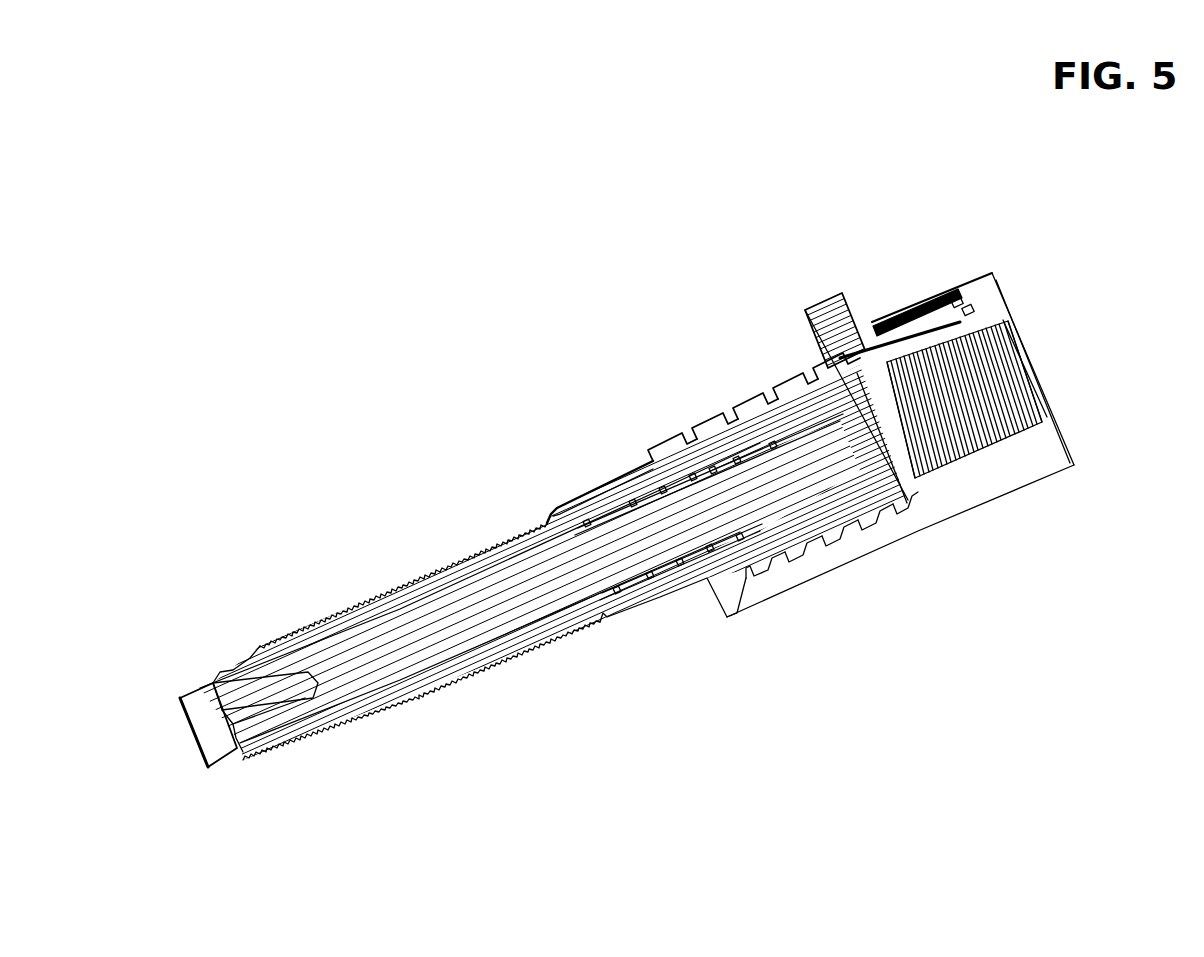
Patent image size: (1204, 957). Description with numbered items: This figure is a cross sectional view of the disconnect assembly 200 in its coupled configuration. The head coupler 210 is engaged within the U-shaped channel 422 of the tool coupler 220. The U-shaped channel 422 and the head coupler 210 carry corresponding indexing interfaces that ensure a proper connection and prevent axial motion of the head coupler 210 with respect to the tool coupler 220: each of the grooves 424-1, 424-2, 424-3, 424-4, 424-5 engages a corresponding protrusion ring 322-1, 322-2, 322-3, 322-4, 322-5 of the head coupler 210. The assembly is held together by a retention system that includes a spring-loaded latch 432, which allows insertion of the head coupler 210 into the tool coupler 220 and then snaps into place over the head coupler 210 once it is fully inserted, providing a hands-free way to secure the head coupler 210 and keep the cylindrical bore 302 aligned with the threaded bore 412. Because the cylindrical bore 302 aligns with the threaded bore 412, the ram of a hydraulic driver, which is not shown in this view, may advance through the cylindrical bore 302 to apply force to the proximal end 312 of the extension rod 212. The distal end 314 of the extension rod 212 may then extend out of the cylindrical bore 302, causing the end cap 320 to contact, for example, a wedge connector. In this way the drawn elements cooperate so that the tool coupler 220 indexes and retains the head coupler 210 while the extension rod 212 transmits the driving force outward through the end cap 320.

The disconnect assembly 200 is at (328, 203).
The head coupler 210 is at (620, 607).
The extension rod 212 is at (398, 612).
The tool coupler 220 is at (1032, 472).
The cylindrical bore 302 is at (900, 417).
The proximal end 312 is at (873, 426).
The distal end 314 is at (243, 756).
The end cap 320 is at (196, 686).
The protrusion ring 322-1 is at (740, 577).
The protrusion ring 322-2 is at (780, 560).
The protrusion ring 322-3 is at (820, 543).
The protrusion ring 322-4 is at (858, 523).
The protrusion ring 322-5 is at (897, 503).
The threaded bore 412 is at (1052, 400).
The U-shaped channel 422 is at (640, 456).
The groove 424-1 is at (677, 438).
The groove 424-2 is at (717, 437).
The groove 424-3 is at (757, 420).
The groove 424-4 is at (793, 398).
The groove 424-5 is at (823, 383).
The spring-loaded latch 432 is at (837, 308).